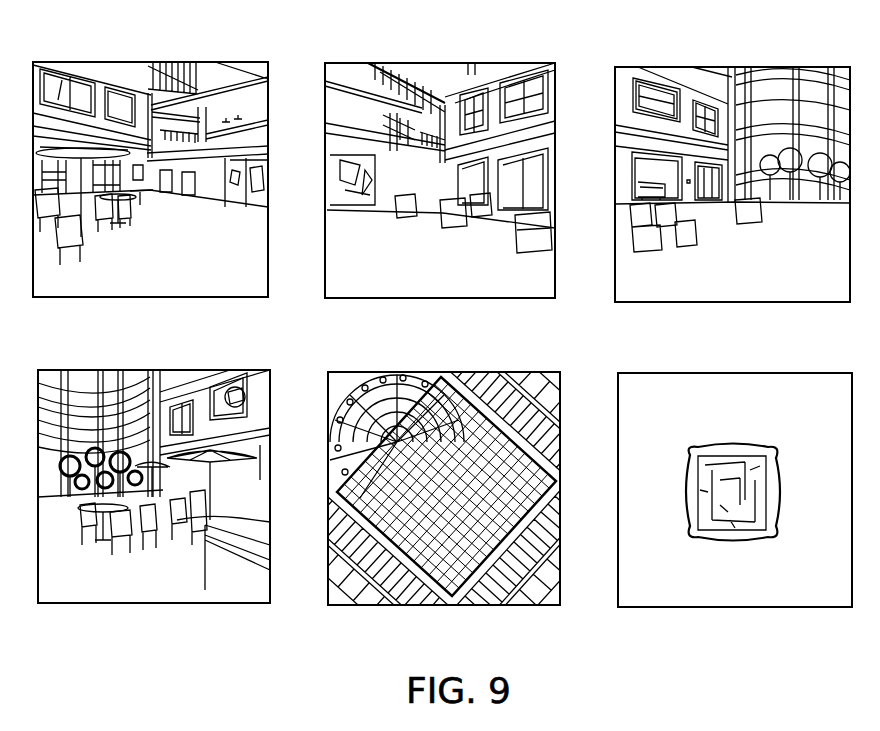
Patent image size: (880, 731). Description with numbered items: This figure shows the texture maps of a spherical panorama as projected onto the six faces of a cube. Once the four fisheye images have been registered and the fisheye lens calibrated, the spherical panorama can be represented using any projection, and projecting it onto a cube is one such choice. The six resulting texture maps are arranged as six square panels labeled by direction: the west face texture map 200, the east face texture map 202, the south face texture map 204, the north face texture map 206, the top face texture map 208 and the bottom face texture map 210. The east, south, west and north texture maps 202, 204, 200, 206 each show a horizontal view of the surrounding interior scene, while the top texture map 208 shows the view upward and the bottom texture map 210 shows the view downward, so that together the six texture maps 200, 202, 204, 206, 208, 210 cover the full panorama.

The texture map 200 is at (760, 67).
The texture map 202 is at (123, 62).
The texture map 204 is at (398, 63).
The texture map 206 is at (185, 605).
The texture map 208 is at (483, 607).
The texture map 210 is at (772, 608).